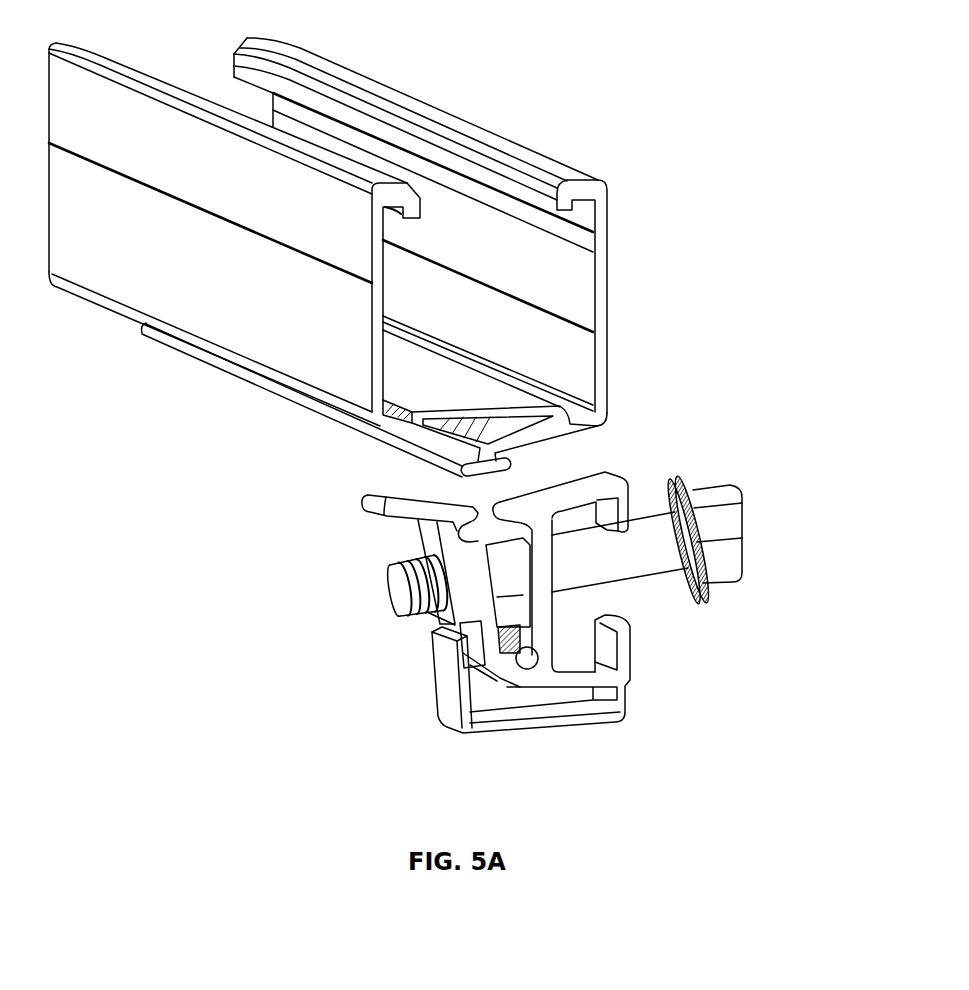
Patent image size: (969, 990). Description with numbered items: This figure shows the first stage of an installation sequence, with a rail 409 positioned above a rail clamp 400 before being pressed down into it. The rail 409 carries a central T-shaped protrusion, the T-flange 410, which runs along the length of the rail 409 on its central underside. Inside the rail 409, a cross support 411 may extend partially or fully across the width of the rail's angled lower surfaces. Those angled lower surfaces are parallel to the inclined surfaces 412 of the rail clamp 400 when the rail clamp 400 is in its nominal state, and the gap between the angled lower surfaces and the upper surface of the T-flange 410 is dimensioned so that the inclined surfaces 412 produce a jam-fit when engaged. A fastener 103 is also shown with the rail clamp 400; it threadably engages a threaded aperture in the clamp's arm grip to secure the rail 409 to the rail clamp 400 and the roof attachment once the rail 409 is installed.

The rail 409 is at (600, 232).
The T-flange 410 is at (500, 468).
The cross support 411 is at (457, 402).
The inclined surfaces 412 is at (377, 494).
The rail clamp 400 is at (420, 635).
The fastener 103 is at (733, 524).